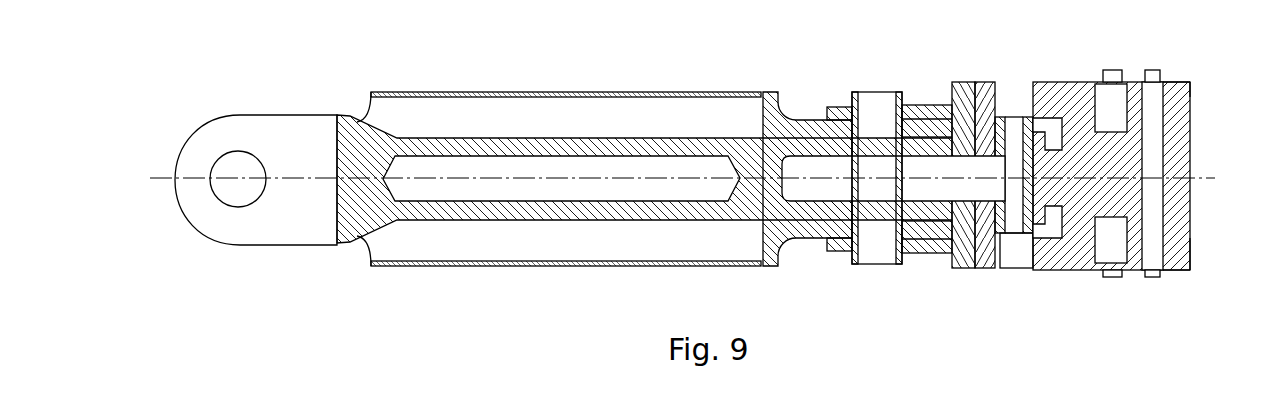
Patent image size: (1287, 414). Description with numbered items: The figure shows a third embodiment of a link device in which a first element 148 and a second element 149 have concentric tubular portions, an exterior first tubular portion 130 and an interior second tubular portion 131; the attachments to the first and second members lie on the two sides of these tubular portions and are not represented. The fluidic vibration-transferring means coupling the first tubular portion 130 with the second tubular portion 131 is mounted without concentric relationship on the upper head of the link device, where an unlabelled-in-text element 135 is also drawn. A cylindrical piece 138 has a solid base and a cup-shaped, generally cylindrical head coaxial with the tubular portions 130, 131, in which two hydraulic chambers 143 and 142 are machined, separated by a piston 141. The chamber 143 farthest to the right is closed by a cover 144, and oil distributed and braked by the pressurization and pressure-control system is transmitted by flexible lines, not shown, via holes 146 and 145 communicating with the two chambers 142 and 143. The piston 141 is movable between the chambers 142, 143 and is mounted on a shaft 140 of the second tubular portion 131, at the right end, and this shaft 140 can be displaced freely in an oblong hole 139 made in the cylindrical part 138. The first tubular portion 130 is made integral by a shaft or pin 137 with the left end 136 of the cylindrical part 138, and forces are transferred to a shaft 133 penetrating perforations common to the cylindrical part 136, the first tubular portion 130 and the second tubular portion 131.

The first tubular portion 130 is at (541, 266).
The second tubular portion 131 is at (465, 222).
The shaft 133 is at (900, 266).
The piston head 135 is at (800, 238).
The end of cylindrical part 136 is at (990, 270).
The shaft or pin 137 is at (962, 270).
The cylindrical piece 138 is at (1142, 173).
The oblong hole 139 is at (1031, 263).
The shaft 140 is at (1025, 115).
The piston 141 is at (1194, 145).
The hydraulic chamber 142 is at (1110, 247).
The hydraulic chamber 143 is at (1163, 238).
The cover 144 is at (1190, 97).
The hole 145 is at (1157, 70).
The hole 146 is at (1112, 70).
The first element 148 is at (559, 158).
The second element 149 is at (156, 127).